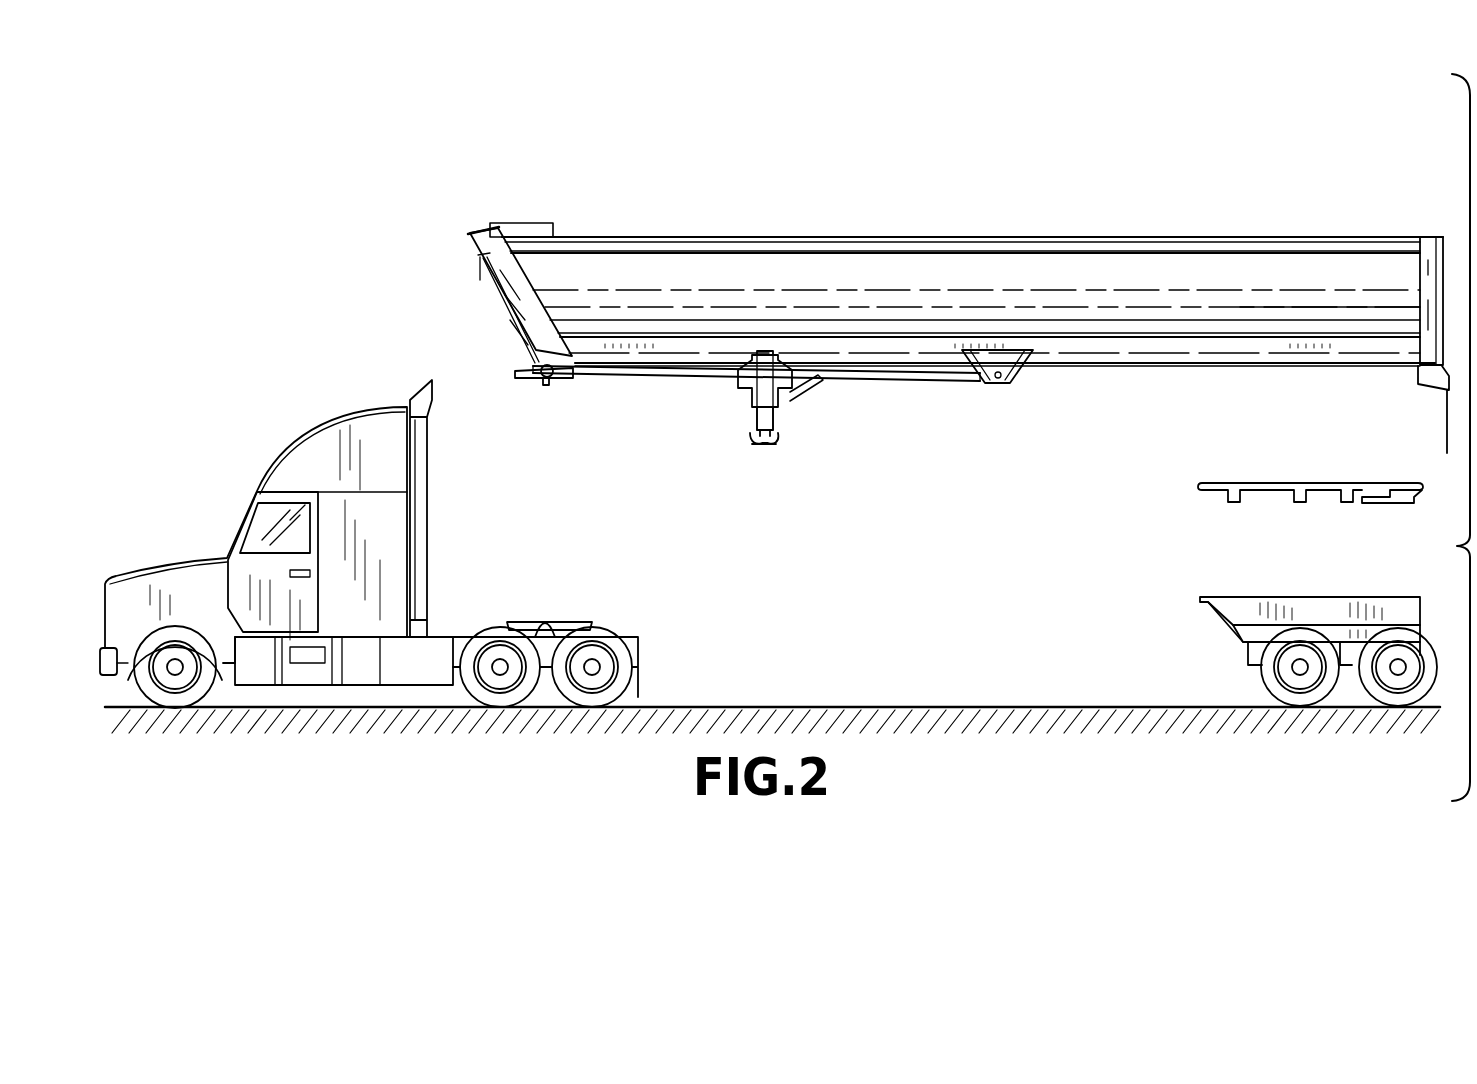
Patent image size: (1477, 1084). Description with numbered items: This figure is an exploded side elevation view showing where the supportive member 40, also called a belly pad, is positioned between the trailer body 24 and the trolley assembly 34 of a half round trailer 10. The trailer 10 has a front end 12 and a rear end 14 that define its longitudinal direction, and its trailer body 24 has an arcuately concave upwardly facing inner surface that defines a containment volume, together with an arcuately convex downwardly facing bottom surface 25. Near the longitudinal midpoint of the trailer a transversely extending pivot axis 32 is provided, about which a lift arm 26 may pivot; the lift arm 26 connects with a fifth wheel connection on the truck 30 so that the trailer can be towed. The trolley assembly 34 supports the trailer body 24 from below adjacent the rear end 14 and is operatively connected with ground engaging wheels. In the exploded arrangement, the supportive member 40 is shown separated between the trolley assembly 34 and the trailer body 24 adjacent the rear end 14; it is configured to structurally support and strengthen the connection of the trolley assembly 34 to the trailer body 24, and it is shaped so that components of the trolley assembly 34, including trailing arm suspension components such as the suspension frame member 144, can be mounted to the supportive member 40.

The half round trailer 10 is at (731, 185).
The front end 12 is at (459, 213).
The rear end 14 is at (1437, 213).
The trailer body 24 is at (1203, 288).
The bottom surface 25 is at (1316, 294).
The lift arm 26 is at (882, 379).
The truck 30 is at (234, 514).
The pivot axis 32 is at (998, 382).
The trolley assembly 34 is at (1297, 593).
The supportive member 40 is at (1269, 478).
The suspension frame member 144 is at (1222, 620).